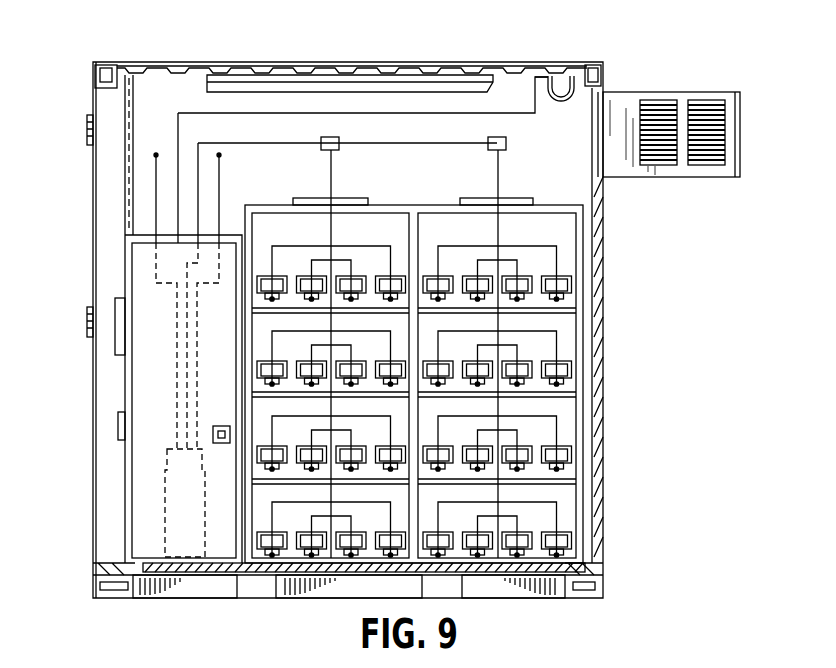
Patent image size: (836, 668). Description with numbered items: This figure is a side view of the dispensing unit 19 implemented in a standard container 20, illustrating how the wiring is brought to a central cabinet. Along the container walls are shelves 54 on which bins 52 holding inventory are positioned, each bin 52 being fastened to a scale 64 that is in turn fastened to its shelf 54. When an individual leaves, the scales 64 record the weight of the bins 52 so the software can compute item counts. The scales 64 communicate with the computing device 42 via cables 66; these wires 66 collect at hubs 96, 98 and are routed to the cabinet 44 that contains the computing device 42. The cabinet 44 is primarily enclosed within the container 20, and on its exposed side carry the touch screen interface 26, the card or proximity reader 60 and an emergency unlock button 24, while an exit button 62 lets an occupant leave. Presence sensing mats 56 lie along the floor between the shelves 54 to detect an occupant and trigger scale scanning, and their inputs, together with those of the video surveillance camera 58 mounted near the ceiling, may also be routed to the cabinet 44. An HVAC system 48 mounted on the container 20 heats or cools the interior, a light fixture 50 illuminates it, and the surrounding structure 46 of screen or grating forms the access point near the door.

The dispensing unit 19 is at (79, 33).
The container 20 is at (299, 62).
The emergency unlock button 24 is at (118, 425).
The touch screen interface 26 is at (115, 325).
The computing device 42 is at (165, 520).
The cabinet 44 is at (121, 484).
The surrounding structure 46 is at (121, 105).
The HVAC system 48 is at (720, 94).
The light fixture 50 is at (393, 76).
The bins 52 is at (566, 287).
The shelves 54 is at (560, 309).
The presence sensing mats 56 is at (150, 566).
The video surveillance camera 58 is at (560, 76).
The proximity reader 60 is at (125, 396).
The exit button 62 is at (221, 426).
The scales 64 is at (566, 384).
The cables 66 is at (332, 186).
The hub 96 is at (362, 200).
The hub 98 is at (322, 151).